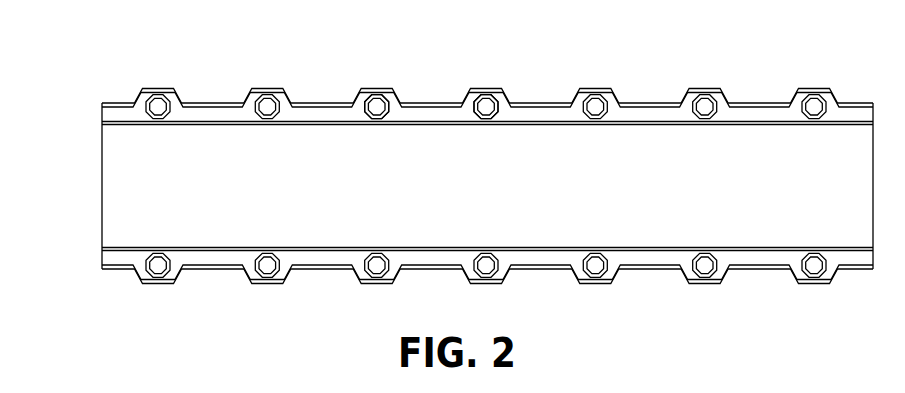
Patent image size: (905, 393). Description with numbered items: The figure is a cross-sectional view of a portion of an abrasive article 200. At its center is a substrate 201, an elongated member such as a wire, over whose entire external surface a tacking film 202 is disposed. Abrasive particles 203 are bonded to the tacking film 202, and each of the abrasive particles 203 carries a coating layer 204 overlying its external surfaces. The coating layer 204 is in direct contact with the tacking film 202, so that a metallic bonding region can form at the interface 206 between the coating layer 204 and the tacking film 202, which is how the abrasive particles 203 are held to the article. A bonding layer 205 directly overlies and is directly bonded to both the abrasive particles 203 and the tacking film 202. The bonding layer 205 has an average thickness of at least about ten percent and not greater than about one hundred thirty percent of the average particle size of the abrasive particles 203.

The abrasive article 200 is at (445, 141).
The substrate 201 is at (143, 191).
The tacking film 202 is at (116, 119).
The abrasive particles 203 is at (363, 98).
The coating layer 204 is at (283, 97).
The bonding layer 205 is at (196, 103).
The interface 206 is at (478, 115).